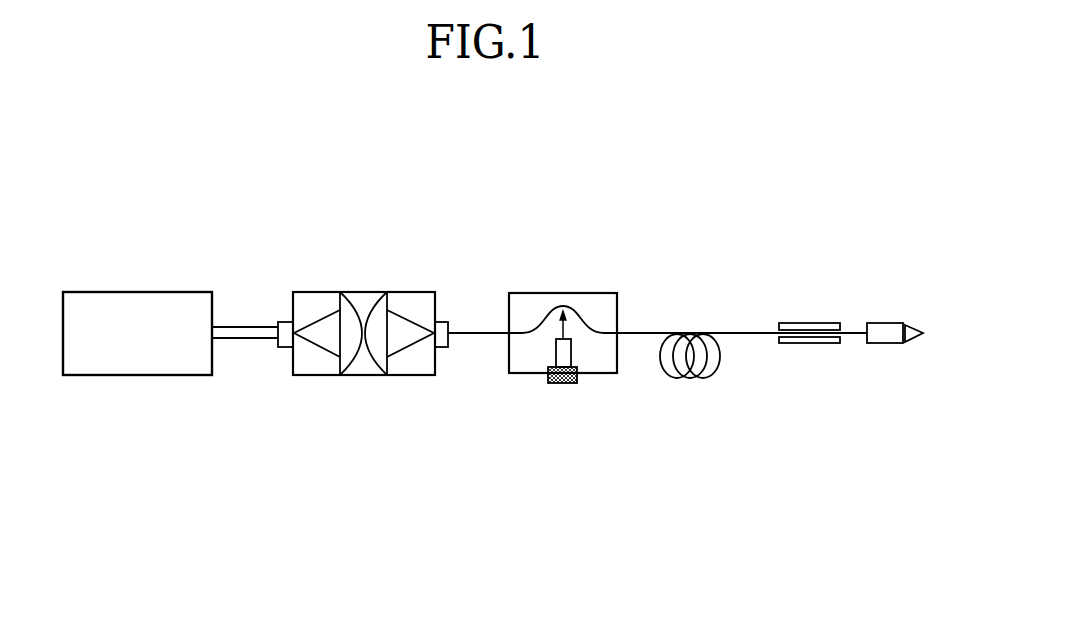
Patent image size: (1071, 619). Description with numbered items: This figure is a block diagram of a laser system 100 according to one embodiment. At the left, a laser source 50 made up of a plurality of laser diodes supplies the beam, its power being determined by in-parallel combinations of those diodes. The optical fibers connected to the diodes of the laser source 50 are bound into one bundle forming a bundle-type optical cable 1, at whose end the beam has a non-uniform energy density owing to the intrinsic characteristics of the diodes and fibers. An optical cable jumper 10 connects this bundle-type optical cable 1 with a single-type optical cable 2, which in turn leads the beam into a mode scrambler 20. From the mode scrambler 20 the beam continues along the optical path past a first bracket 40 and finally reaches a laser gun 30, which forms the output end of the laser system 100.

The laser system 100 is at (493, 220).
The laser source 50 is at (132, 293).
The bundle-type optical cable 1 is at (250, 322).
The optical cable jumper 10 is at (365, 293).
The single-type optical cable 2 is at (475, 330).
The mode scrambler 20 is at (576, 293).
The first bracket 40 is at (803, 322).
The laser gun 30 is at (880, 322).